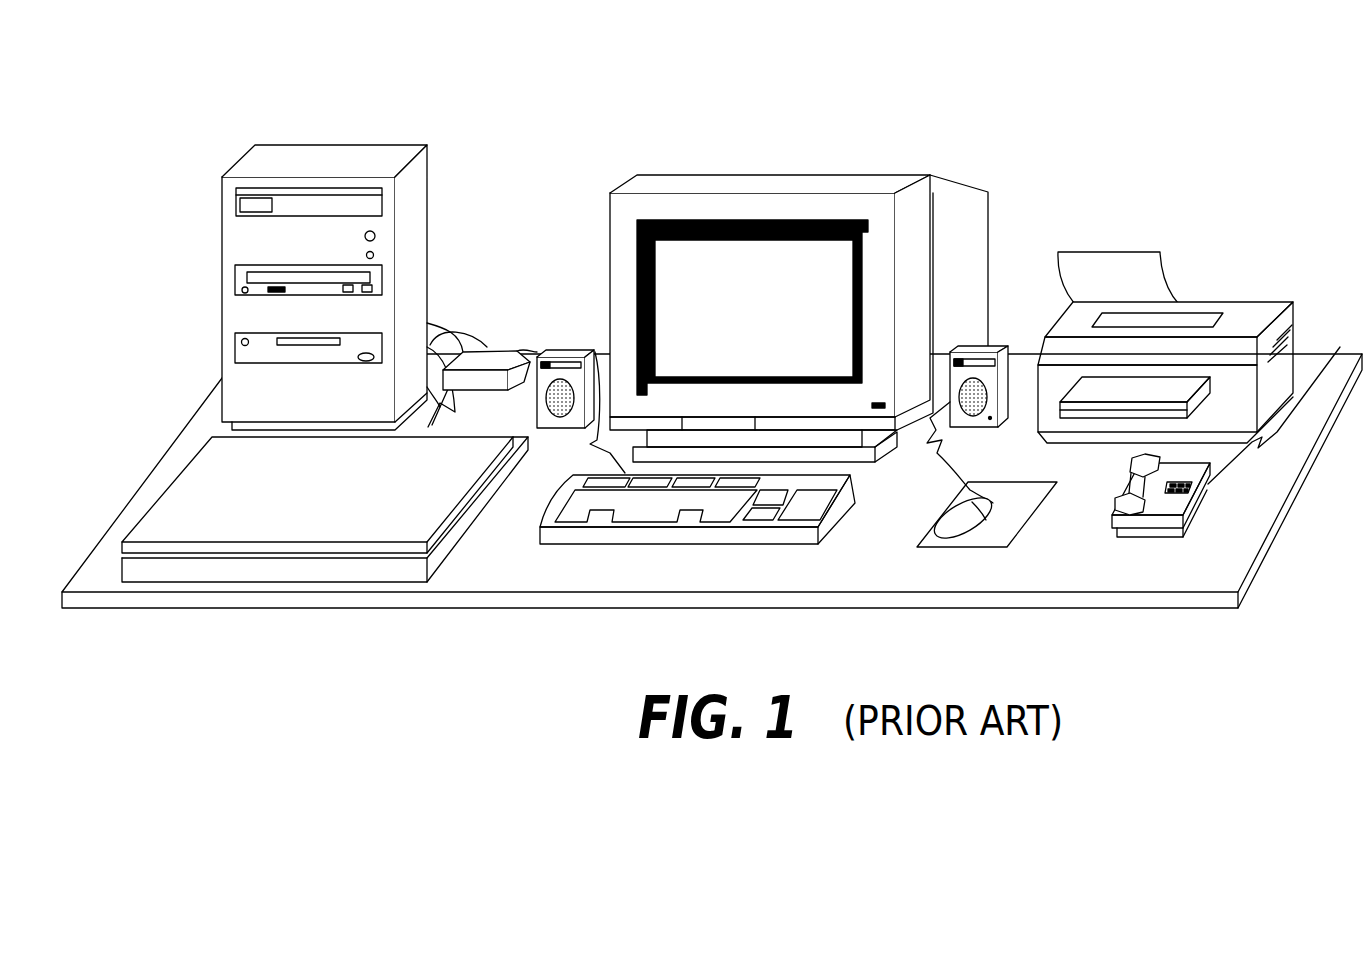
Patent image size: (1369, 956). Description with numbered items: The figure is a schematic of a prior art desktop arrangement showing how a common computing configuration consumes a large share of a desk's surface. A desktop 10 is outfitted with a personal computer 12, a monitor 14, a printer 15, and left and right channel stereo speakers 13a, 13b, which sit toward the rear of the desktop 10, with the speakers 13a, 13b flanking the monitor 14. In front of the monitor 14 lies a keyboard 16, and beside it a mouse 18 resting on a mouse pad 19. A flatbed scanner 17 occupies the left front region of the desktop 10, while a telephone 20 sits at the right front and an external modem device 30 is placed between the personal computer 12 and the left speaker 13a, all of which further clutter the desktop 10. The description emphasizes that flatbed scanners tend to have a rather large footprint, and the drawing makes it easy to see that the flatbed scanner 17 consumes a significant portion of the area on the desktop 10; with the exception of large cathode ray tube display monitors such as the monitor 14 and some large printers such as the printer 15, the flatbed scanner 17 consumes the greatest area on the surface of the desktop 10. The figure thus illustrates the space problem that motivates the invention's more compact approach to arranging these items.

The desktop 10 is at (893, 67).
The personal computer 12 is at (318, 150).
The left channel stereo speaker 13a is at (553, 346).
The right channel stereo speaker 13b is at (1000, 337).
The monitor 14 is at (764, 184).
The printer 15 is at (1242, 310).
The keyboard 16 is at (722, 532).
The flatbed scanner 17 is at (308, 520).
The mouse 18 is at (968, 520).
The mouse pad 19 is at (1010, 505).
The telephone 20 is at (1177, 507).
The external modem device 30 is at (477, 360).